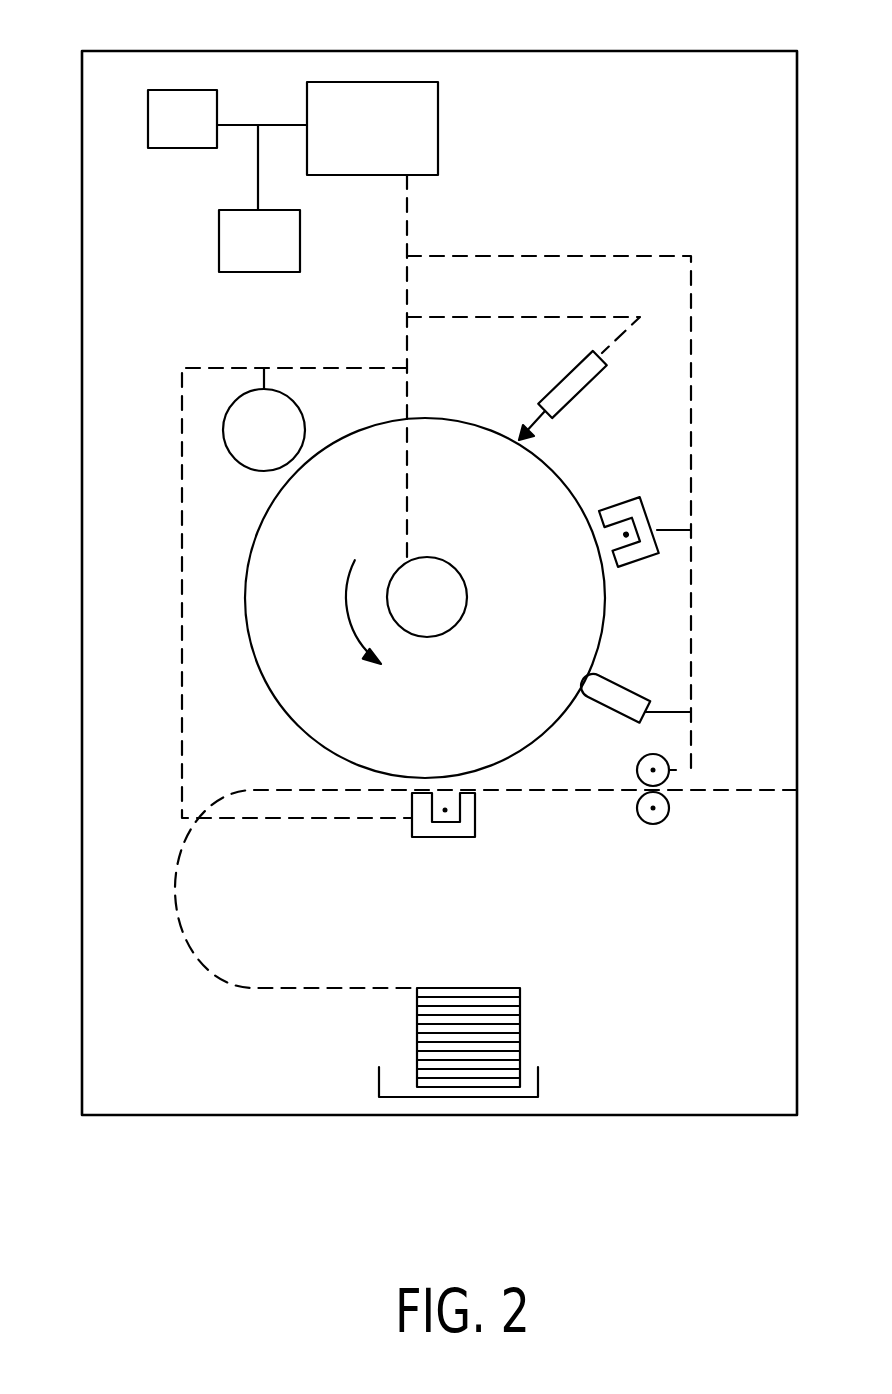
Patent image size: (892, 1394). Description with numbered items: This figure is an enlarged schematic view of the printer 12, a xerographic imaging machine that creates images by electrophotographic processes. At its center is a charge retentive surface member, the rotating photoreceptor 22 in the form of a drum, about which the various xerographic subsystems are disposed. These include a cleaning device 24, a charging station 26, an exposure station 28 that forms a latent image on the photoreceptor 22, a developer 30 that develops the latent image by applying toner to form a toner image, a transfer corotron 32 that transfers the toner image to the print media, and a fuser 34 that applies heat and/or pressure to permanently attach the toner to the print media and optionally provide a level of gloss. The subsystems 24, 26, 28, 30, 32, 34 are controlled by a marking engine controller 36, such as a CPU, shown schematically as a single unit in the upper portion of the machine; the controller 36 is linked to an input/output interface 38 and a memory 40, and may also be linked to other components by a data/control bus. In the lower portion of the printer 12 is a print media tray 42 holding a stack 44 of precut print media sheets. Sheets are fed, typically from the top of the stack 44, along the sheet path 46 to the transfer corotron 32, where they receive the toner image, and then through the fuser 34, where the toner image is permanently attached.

The printer 12 is at (281, 1140).
The photoreceptor 22 is at (447, 420).
The cleaning device 24 is at (643, 690).
The charging station 26 is at (640, 567).
The exposure station 28 is at (592, 387).
The developer 30 is at (305, 418).
The transfer corotron 32 is at (453, 837).
The fuser 34 is at (635, 770).
The marking engine controller 36 is at (365, 82).
The input/output interface 38 is at (190, 90).
The memory 40 is at (219, 238).
The print media tray 42 is at (538, 1070).
The stack 44 is at (520, 1002).
The sheet path 46 is at (205, 953).